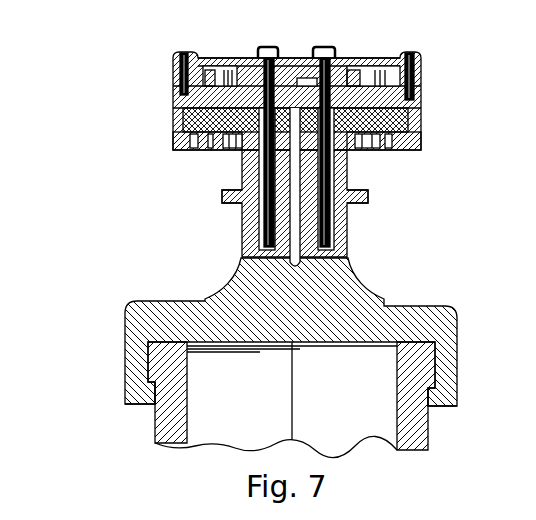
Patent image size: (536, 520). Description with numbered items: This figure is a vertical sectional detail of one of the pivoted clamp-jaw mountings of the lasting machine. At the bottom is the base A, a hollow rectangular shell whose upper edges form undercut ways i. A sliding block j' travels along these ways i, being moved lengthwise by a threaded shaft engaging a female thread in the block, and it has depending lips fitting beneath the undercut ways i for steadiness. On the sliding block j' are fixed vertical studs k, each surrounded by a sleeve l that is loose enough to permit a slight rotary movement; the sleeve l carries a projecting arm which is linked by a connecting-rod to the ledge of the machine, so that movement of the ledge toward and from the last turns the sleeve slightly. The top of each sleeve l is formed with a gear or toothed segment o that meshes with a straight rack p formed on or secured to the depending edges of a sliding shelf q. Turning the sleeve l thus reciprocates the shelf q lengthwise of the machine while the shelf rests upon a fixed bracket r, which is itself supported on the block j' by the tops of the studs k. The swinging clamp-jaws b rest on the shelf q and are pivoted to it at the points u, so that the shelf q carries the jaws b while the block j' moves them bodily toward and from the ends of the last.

The clamp-jaw b is at (226, 68).
The pivot point u is at (278, 57).
The sliding shelf q is at (422, 106).
The fixed bracket r is at (421, 127).
The straight rack p is at (195, 152).
The toothed segment o is at (205, 150).
The vertical stud k is at (268, 175).
The sleeve l is at (243, 211).
The sliding block j' is at (291, 332).
The ways i is at (161, 397).
The base A is at (165, 428).